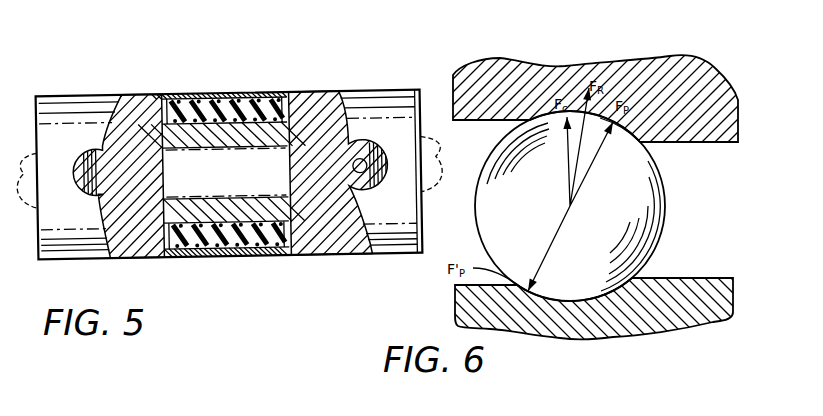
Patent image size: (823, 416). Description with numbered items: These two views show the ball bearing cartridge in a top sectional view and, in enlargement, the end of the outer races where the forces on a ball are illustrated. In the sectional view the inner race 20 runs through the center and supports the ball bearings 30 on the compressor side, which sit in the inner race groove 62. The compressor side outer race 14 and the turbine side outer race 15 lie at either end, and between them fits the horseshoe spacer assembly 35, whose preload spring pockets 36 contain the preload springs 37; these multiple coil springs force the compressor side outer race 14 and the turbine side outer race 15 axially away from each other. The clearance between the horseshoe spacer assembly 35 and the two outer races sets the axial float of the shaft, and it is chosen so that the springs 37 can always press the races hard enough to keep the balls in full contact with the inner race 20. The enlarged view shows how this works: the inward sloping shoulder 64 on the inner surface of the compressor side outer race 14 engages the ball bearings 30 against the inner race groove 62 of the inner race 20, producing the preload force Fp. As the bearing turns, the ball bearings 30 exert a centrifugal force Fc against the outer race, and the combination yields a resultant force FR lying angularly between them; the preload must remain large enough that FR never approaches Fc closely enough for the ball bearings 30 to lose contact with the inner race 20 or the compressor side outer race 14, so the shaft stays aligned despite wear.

In FIG. 5, the compressor side outer race 14 is at (82, 100).
In FIG. 6, the compressor side outer race 14 is at (670, 97).
In FIG. 5, the turbine side outer race 15 is at (375, 115).
In FIG. 6, the inner race 20 is at (695, 287).
In FIG. 6, the ball bearings 30 is at (547, 211).
In FIG. 5, the horseshoe spacer assembly 35 is at (193, 93).
In FIG. 5, the preload spring pockets 36 is at (222, 97).
In FIG. 5, the preload springs 37 is at (257, 95).
In FIG. 6, the inner race groove 62 is at (640, 288).
In FIG. 6, the shoulder 64 is at (642, 126).